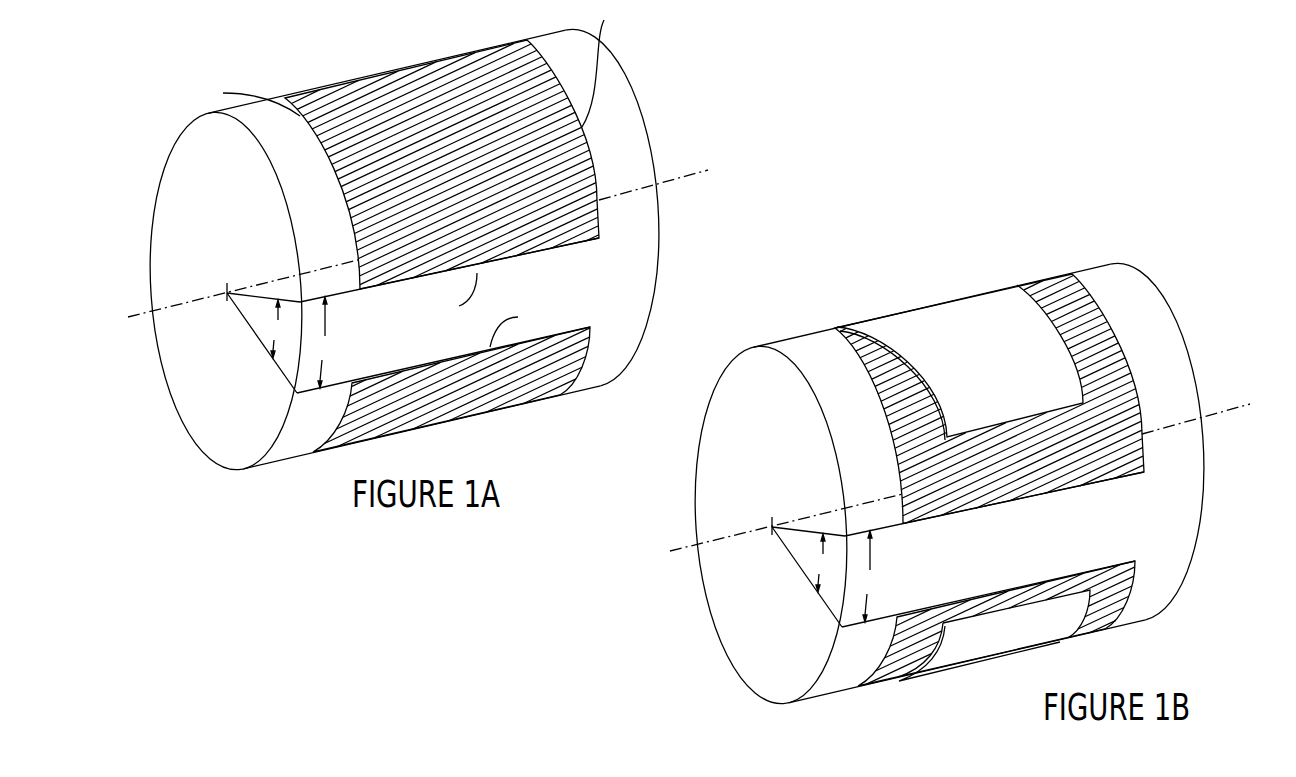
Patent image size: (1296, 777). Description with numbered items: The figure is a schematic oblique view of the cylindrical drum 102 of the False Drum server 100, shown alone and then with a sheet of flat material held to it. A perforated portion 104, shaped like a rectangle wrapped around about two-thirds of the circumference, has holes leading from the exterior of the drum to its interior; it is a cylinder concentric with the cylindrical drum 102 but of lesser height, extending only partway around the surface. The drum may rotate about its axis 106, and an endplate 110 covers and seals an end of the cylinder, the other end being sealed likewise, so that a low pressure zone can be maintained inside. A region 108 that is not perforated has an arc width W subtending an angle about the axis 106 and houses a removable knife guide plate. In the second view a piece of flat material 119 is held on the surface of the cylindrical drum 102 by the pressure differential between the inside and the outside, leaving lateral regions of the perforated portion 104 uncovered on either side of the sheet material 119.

In FIG. 1A, the False Drum server 100 is at (424, 238).
In FIG. 1B, the False Drum server 100 is at (966, 476).
In FIG. 1A, the cylindrical drum 102 is at (620, 107).
In FIG. 1B, the cylindrical drum 102 is at (991, 482).
In FIG. 1A, the perforated portion 104 is at (400, 68).
In FIG. 1B, the perforated portion 104 is at (835, 328).
In FIG. 1A, the axis 106 is at (683, 173).
In FIG. 1B, the axis 106 is at (973, 460).
In FIG. 1A, the non-perforated region 108 is at (576, 252).
In FIG. 1B, the non-perforated region 108 is at (1013, 549).
In FIG. 1A, the endplate 110 is at (172, 170).
In FIG. 1B, the endplate 110 is at (756, 525).
In FIG. 1B, the sheet of flat material 119 is at (943, 297).